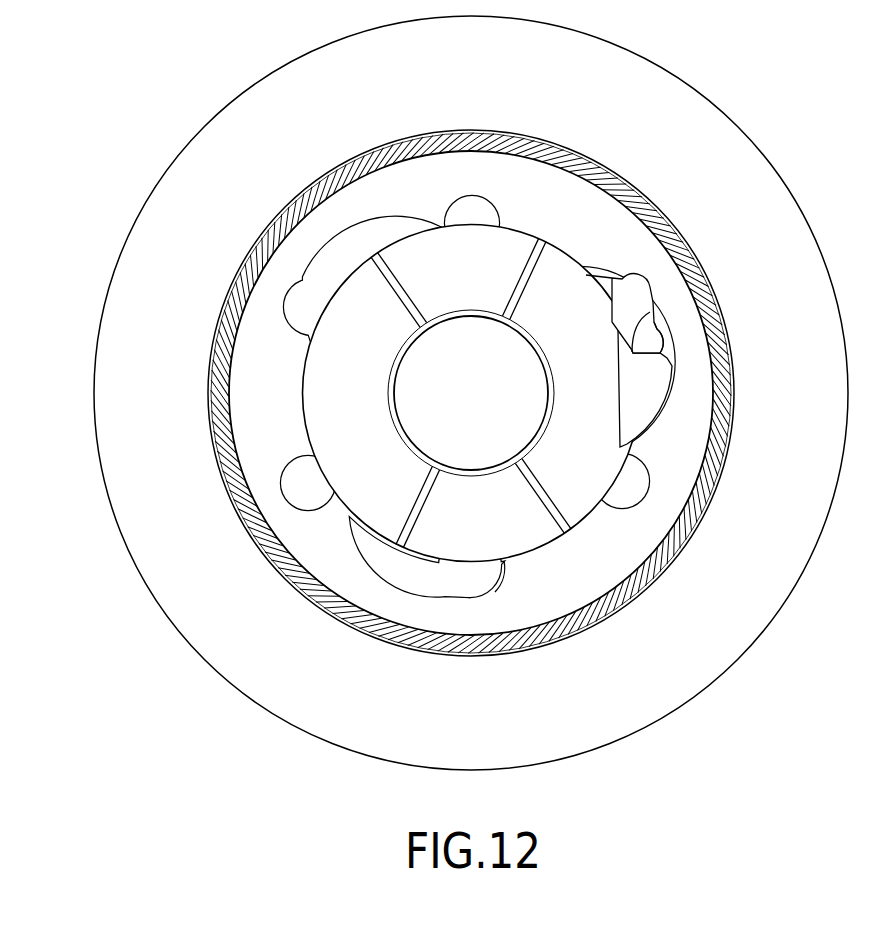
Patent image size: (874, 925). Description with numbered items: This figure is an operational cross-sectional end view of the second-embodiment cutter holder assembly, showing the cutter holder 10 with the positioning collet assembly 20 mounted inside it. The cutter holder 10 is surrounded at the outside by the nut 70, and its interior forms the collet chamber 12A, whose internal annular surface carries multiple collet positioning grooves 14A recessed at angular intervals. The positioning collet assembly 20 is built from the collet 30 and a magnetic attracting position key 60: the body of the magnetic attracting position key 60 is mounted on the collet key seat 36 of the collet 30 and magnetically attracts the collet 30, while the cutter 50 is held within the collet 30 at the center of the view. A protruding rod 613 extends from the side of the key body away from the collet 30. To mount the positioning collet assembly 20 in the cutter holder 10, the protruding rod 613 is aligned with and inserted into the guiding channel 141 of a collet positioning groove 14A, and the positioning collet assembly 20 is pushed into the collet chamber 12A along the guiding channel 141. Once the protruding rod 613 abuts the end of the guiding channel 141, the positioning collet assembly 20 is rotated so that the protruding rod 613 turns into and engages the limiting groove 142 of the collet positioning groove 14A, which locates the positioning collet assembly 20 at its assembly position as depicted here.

The nut 70 is at (237, 652).
The cutter holder 10 is at (254, 440).
The collet chamber 12A is at (496, 238).
The collet positioning groove 14A is at (343, 250).
The positioning collet assembly 20 is at (630, 487).
The collet 30 is at (526, 545).
The collet key seat 36 is at (636, 386).
The cutter 50 is at (420, 390).
The guiding channel 141 is at (613, 273).
The limiting groove 142 is at (663, 334).
The magnetic attracting position key 60 is at (655, 415).
The protruding rod 613 is at (654, 374).